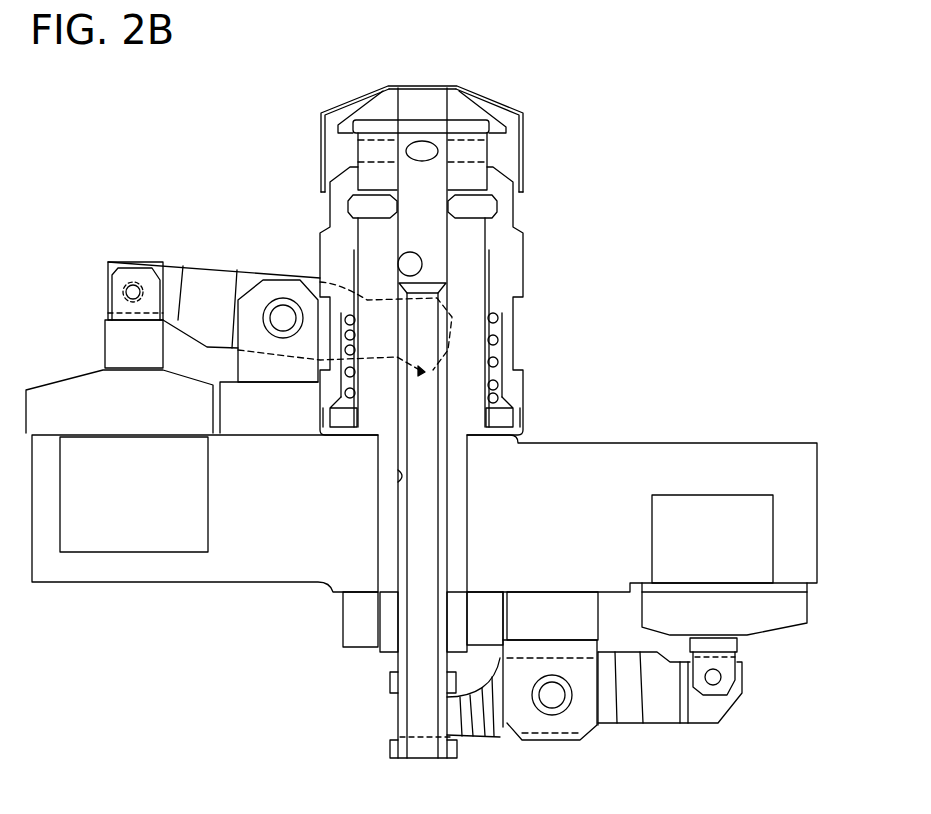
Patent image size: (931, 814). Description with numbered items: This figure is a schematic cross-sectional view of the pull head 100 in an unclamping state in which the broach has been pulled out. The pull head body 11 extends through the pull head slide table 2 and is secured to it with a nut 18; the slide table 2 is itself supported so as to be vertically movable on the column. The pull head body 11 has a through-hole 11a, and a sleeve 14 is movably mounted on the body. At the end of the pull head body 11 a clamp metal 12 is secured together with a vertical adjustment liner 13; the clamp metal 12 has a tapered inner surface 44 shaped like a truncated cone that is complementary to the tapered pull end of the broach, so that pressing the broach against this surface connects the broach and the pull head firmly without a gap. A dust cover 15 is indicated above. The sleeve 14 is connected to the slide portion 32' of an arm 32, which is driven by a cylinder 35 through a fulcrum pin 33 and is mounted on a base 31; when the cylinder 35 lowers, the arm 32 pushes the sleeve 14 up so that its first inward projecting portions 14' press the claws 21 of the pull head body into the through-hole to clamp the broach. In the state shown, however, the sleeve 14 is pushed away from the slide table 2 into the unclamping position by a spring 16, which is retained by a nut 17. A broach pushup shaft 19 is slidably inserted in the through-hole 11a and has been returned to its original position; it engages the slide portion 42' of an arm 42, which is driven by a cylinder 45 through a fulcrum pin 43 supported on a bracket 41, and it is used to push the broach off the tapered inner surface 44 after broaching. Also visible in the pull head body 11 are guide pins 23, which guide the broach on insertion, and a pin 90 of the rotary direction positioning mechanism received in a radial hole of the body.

The pull head slide table 2 is at (678, 440).
The pull head body 11 is at (378, 512).
The through-hole 11a is at (399, 477).
The clamp metal 12 is at (495, 116).
The vertical adjustment liner 13 is at (366, 122).
The sleeve 14 is at (302, 145).
The first inward projecting portions 14' is at (518, 206).
The dust cover 15 is at (518, 110).
The spring 16 is at (493, 340).
The nut 17 is at (495, 417).
The nut 18 is at (350, 610).
The broach pushup shaft 19 is at (395, 744).
The claws 21 is at (360, 206).
The guide pins 23 is at (436, 153).
The lever base 31 is at (263, 372).
The arm 32 is at (214, 281).
The slide portion 32' is at (428, 332).
The fulcrum pin 33 is at (283, 318).
The cylinder 35 is at (97, 507).
The support 41 is at (572, 617).
The arm 42 is at (594, 718).
The slide portion 42' is at (388, 701).
The fulcrum pin 43 is at (552, 700).
The tapered inner surface 44 is at (449, 121).
The cylinder 45 is at (727, 613).
The pins 90 is at (420, 262).
The pull head 100 is at (497, 94).